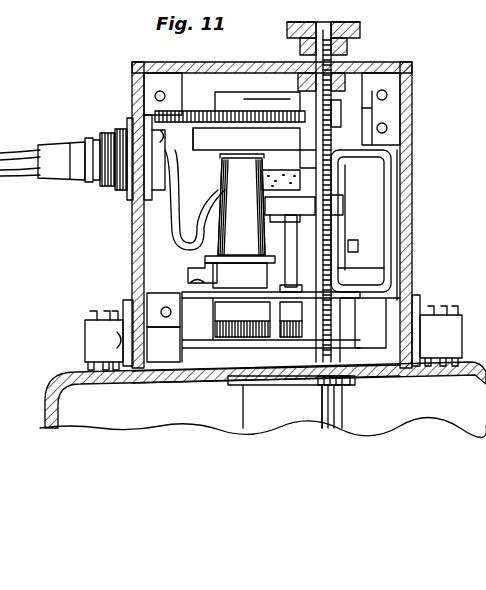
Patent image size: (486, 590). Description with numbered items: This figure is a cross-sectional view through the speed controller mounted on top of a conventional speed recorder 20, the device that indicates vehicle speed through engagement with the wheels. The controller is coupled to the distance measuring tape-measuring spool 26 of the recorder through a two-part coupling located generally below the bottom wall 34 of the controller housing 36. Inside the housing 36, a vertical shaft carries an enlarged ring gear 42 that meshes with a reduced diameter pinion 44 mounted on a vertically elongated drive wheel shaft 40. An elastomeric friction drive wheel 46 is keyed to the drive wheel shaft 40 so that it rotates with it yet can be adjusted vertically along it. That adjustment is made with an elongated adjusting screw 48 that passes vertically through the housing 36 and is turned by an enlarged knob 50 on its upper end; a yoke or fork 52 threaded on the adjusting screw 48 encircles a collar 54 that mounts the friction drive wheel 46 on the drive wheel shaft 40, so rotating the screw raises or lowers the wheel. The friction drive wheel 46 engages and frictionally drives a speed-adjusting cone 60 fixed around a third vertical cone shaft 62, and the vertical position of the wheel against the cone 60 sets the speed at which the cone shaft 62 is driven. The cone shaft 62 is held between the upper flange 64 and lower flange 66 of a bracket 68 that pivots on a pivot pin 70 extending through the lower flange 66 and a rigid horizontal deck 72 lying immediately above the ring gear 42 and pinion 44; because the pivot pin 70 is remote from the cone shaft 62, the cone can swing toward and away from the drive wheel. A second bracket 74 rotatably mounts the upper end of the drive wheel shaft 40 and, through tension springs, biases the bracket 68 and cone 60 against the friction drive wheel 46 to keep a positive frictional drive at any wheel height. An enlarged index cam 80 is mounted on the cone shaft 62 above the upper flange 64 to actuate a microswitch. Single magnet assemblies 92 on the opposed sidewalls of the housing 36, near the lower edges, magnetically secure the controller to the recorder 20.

The speed recorder 20 is at (42, 416).
The tape-measuring spool 26 is at (332, 405).
The bottom wall 34 is at (136, 383).
The housing 36 is at (416, 108).
The drive wheel shaft 40 is at (265, 260).
The ring gear 42 is at (255, 332).
The pinion 44 is at (286, 333).
The friction drive wheel 46 is at (262, 182).
The adjusting screw 48 is at (330, 168).
The knob 50 is at (346, 23).
The fork 52 is at (283, 207).
The collar 54 is at (334, 207).
The speed-adjusting cone 60 is at (190, 236).
The cone shaft 62 is at (242, 130).
The upper flange 64 is at (183, 158).
The lower flange 66 is at (190, 278).
The bracket 68 is at (396, 192).
The pivot pin 70 is at (344, 259).
The deck 72 is at (366, 295).
The second bracket 74 is at (340, 236).
The index cam 80 is at (200, 112).
The single magnet assembly 92 is at (88, 320).